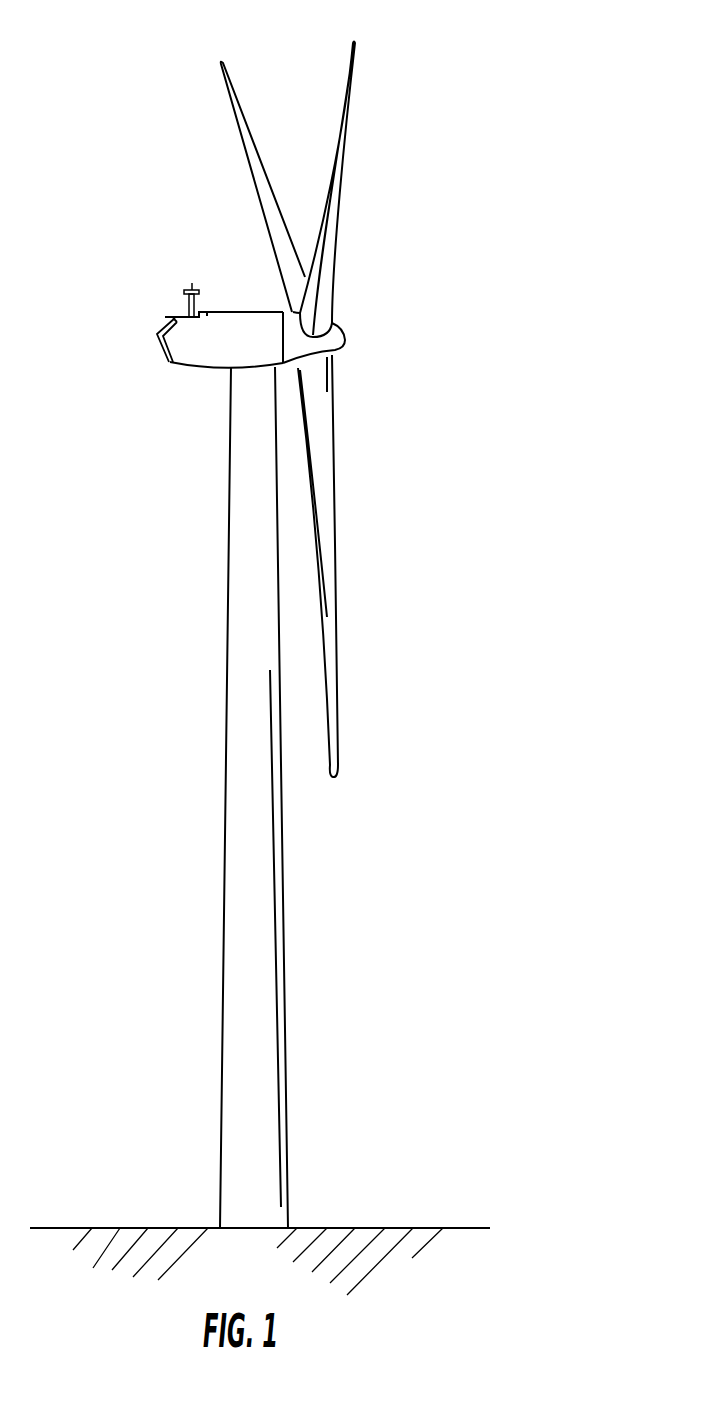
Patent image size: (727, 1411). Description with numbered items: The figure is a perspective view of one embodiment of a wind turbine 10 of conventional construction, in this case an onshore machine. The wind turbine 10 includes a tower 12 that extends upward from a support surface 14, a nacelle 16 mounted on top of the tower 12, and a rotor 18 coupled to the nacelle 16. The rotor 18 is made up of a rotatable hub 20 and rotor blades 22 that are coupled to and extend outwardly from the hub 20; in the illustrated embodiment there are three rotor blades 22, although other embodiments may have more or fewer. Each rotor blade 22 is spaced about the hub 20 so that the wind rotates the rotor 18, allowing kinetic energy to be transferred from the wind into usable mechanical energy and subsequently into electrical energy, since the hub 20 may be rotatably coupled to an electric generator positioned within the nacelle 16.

The wind turbine 10 is at (469, 174).
The tower 12 is at (230, 972).
The support surface 14 is at (205, 1228).
The nacelle 16 is at (200, 347).
The rotor 18 is at (352, 358).
The rotatable hub 20 is at (337, 342).
The rotor blade 22 is at (248, 130).